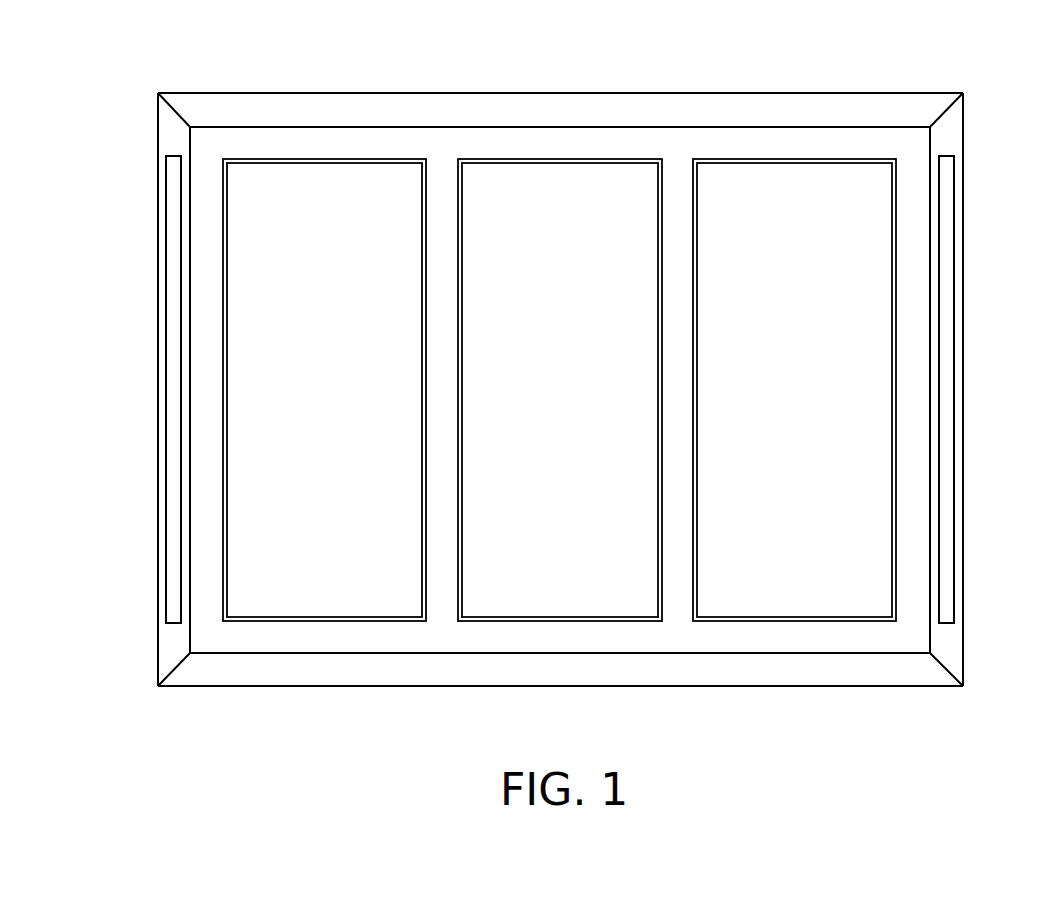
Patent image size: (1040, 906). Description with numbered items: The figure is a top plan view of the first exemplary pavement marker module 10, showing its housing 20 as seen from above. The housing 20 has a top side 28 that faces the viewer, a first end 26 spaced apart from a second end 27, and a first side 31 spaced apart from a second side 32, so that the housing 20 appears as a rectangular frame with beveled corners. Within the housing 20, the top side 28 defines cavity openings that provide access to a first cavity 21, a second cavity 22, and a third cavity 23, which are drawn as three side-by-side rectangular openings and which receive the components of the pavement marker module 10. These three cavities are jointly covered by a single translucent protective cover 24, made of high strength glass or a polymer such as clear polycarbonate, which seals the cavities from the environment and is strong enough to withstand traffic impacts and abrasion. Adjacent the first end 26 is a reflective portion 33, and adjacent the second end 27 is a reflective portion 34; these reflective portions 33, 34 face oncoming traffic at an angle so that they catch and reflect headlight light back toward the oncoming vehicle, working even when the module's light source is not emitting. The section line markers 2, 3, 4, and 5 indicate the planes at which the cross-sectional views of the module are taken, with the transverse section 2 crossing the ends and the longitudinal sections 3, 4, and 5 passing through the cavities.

The pavement marker module 10 is at (113, 126).
The housing 20 is at (948, 130).
The first cavity 21 is at (304, 605).
The second cavity 22 is at (526, 605).
The third cavity 23 is at (761, 605).
The protective cover 24 is at (918, 317).
The first end 26 is at (157, 214).
The second end 27 is at (963, 213).
The top side 28 is at (837, 640).
The first side 31 is at (922, 92).
The second side 32 is at (922, 687).
The reflective portion 33 is at (173, 497).
The reflective portion 34 is at (947, 497).
The section line 2- 2 is at (158, 389).
The section line 3- 3 is at (522, 45).
The section line 4- 4 is at (287, 45).
The section line 5- 5 is at (758, 45).